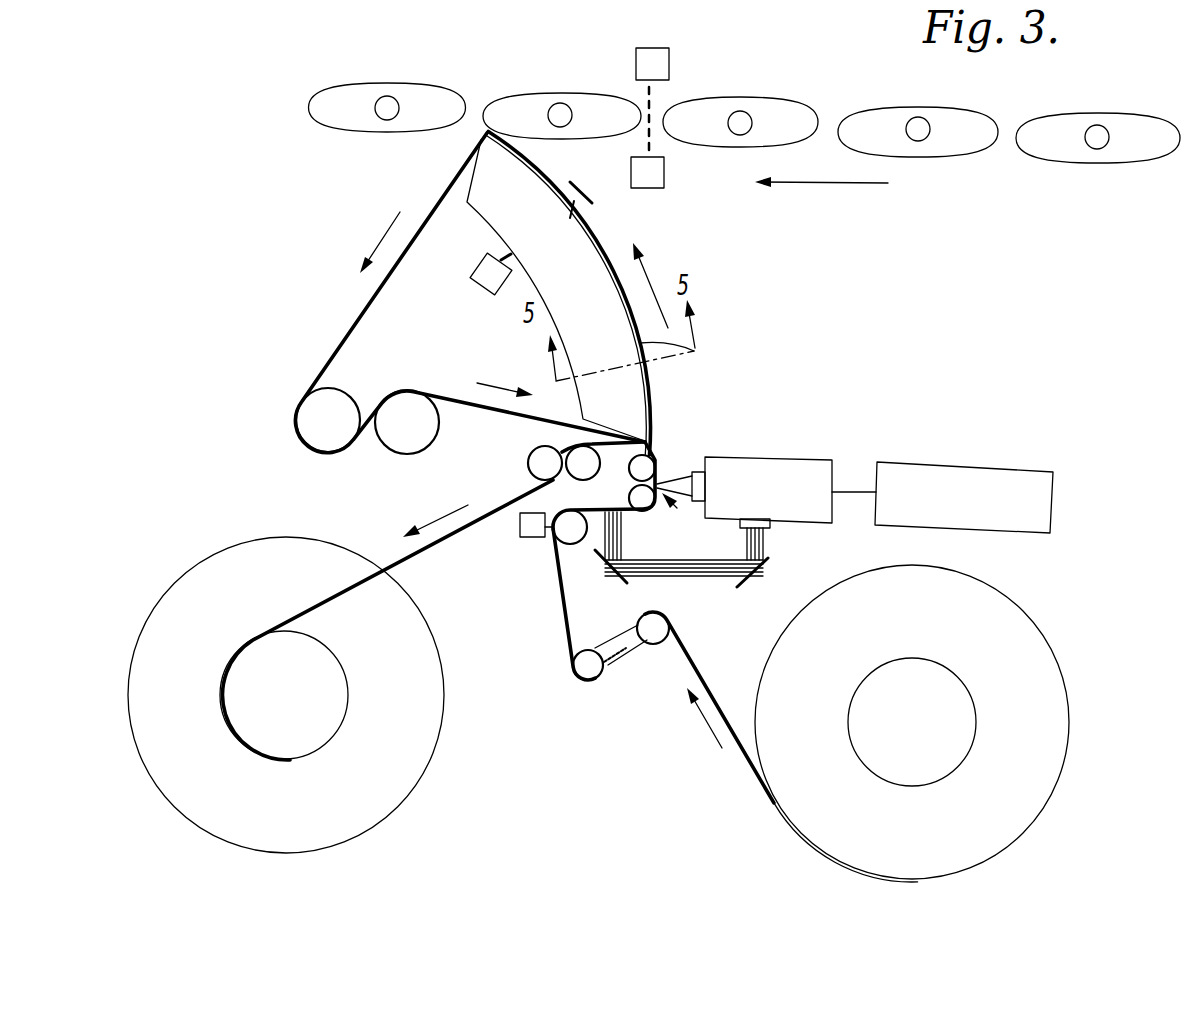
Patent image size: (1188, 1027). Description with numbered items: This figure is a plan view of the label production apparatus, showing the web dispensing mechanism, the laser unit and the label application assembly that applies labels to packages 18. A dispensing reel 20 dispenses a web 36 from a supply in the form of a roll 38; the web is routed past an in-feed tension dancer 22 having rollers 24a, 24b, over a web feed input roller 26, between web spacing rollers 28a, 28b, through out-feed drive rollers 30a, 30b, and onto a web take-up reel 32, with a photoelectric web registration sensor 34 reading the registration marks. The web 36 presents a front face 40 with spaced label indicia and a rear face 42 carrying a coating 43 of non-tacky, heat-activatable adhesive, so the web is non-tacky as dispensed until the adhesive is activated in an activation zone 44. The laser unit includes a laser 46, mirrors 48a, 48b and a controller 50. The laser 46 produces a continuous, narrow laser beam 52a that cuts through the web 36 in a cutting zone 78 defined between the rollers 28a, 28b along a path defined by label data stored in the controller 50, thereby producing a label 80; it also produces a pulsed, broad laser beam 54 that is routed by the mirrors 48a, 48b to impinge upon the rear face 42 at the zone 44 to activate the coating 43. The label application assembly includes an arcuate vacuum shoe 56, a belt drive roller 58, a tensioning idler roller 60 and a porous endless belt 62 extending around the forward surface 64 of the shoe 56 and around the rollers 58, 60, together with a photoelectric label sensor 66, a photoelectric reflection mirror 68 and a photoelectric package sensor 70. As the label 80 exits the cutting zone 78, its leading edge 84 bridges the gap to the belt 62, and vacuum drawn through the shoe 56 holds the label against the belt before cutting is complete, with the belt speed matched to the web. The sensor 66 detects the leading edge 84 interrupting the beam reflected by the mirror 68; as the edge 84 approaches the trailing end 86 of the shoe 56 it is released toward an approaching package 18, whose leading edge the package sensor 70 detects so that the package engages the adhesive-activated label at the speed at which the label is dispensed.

The packages 18 is at (745, 81).
The dispensing reel 20 is at (937, 722).
The in-feed tension dancer 22 is at (618, 692).
The roller 24a is at (655, 667).
The roller 24b is at (563, 692).
The web feed input roller 26 is at (574, 604).
The web spacing roller 28a is at (666, 518).
The web spacing roller 28b is at (670, 434).
The out-feed drive roller 30a is at (546, 451).
The out-feed drive roller 30b is at (521, 471).
The web take-up reel 32 is at (286, 695).
The photoelectric web registration sensor 34 is at (533, 552).
The web 36 is at (393, 620).
The roll 38 is at (962, 723).
The front face 40 is at (706, 779).
The rear face 42 is at (719, 692).
The coating 43 is at (733, 678).
The activation zone 44 is at (636, 559).
The laser 46 is at (784, 462).
The mirror 48a is at (799, 559).
The mirror 48b is at (601, 592).
The controller 50 is at (964, 471).
The laser beam 52a is at (694, 456).
The laser beam 54 is at (684, 589).
The arcuate vacuum shoe 56 is at (474, 263).
The belt drive roller 58 is at (288, 423).
The tensioning idler roller 60 is at (424, 429).
The porous endless belt 62 is at (452, 293).
The forward surface 64 is at (646, 361).
The photoelectric label sensor 66 is at (540, 290).
The photoelectric reflection mirror 68 is at (570, 224).
The photoelectric package sensor 70 is at (677, 125).
The cutting zone 78 is at (740, 539).
The label 80 is at (568, 293).
The leading edge 84 is at (416, 151).
The trailing end 86 is at (424, 174).